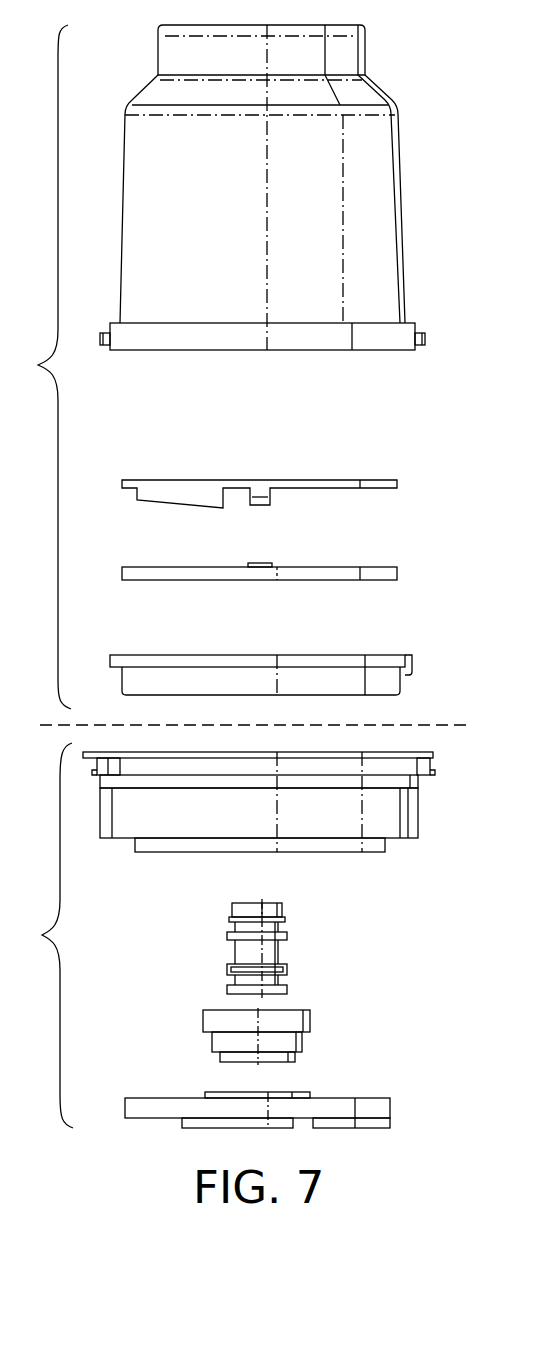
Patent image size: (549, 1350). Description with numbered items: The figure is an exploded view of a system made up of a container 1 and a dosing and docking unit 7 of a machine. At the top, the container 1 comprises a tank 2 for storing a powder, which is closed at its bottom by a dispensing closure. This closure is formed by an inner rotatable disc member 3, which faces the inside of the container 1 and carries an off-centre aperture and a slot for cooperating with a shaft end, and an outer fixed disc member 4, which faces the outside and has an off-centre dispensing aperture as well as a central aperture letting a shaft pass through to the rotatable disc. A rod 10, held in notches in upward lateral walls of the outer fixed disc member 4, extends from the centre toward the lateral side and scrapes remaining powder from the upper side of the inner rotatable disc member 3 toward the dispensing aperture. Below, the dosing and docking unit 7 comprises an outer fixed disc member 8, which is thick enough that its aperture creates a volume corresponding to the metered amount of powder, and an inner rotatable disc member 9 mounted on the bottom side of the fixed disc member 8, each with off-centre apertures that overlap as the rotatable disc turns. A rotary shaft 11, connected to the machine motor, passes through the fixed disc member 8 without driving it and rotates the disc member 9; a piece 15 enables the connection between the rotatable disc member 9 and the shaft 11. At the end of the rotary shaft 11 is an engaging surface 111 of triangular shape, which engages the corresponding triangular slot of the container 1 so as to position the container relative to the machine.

The container 1 is at (46, 367).
The tank 2 is at (382, 207).
The inner rotatable disc member 3 is at (398, 572).
The outer fixed disc member 4 is at (412, 660).
The dosing and docking unit 7 is at (48, 935).
The outer fixed disc member 8 is at (400, 822).
The inner rotatable disc member 9 is at (385, 1121).
The rod 10 is at (398, 483).
The rotary shaft 11 is at (255, 935).
The engaging surface 111 is at (232, 912).
The piece 15 is at (303, 1018).